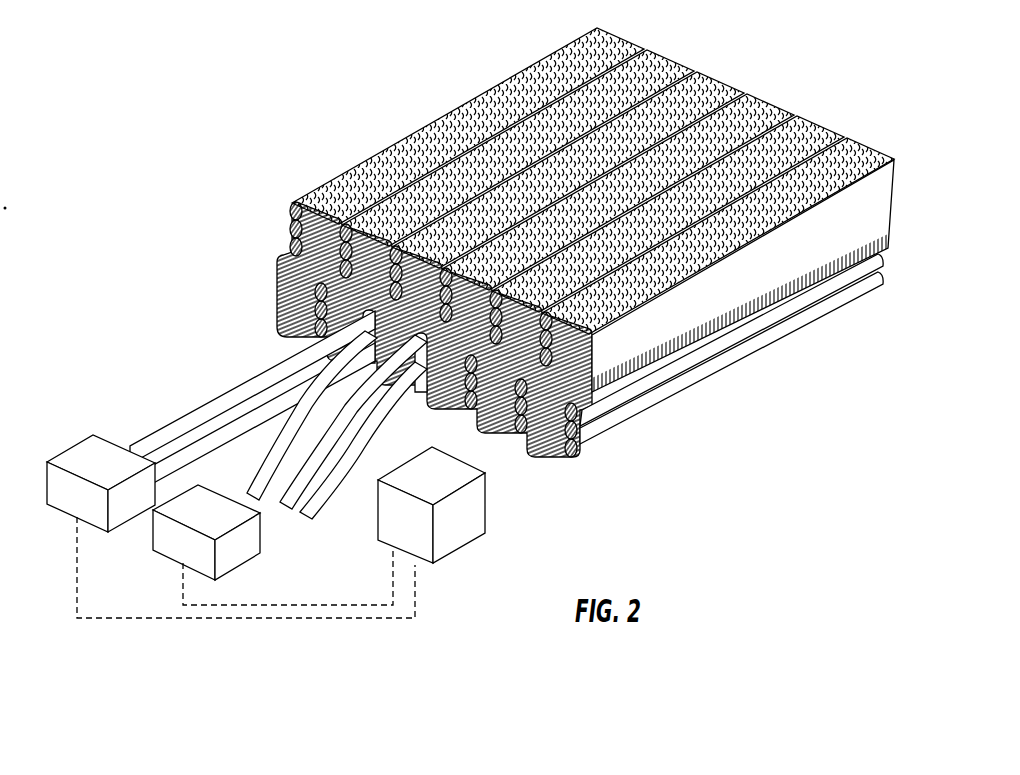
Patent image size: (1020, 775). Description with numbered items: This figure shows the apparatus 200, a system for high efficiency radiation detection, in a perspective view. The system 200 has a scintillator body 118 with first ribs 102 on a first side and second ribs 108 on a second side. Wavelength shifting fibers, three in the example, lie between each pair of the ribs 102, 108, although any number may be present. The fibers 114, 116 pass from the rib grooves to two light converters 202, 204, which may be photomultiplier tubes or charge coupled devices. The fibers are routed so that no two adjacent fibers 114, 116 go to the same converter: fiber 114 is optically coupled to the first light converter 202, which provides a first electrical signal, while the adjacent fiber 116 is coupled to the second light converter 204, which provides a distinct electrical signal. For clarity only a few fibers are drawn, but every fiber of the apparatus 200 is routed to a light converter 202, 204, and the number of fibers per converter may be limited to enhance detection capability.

The apparatus 200 is at (168, 82).
The first ribs 102 is at (458, 127).
The second ribs 108 is at (548, 458).
The fiber 114 is at (243, 433).
The fiber 116 is at (242, 496).
The scintillator body 118 is at (560, 392).
The first light converter 202 is at (87, 457).
The second light converter 204 is at (172, 562).